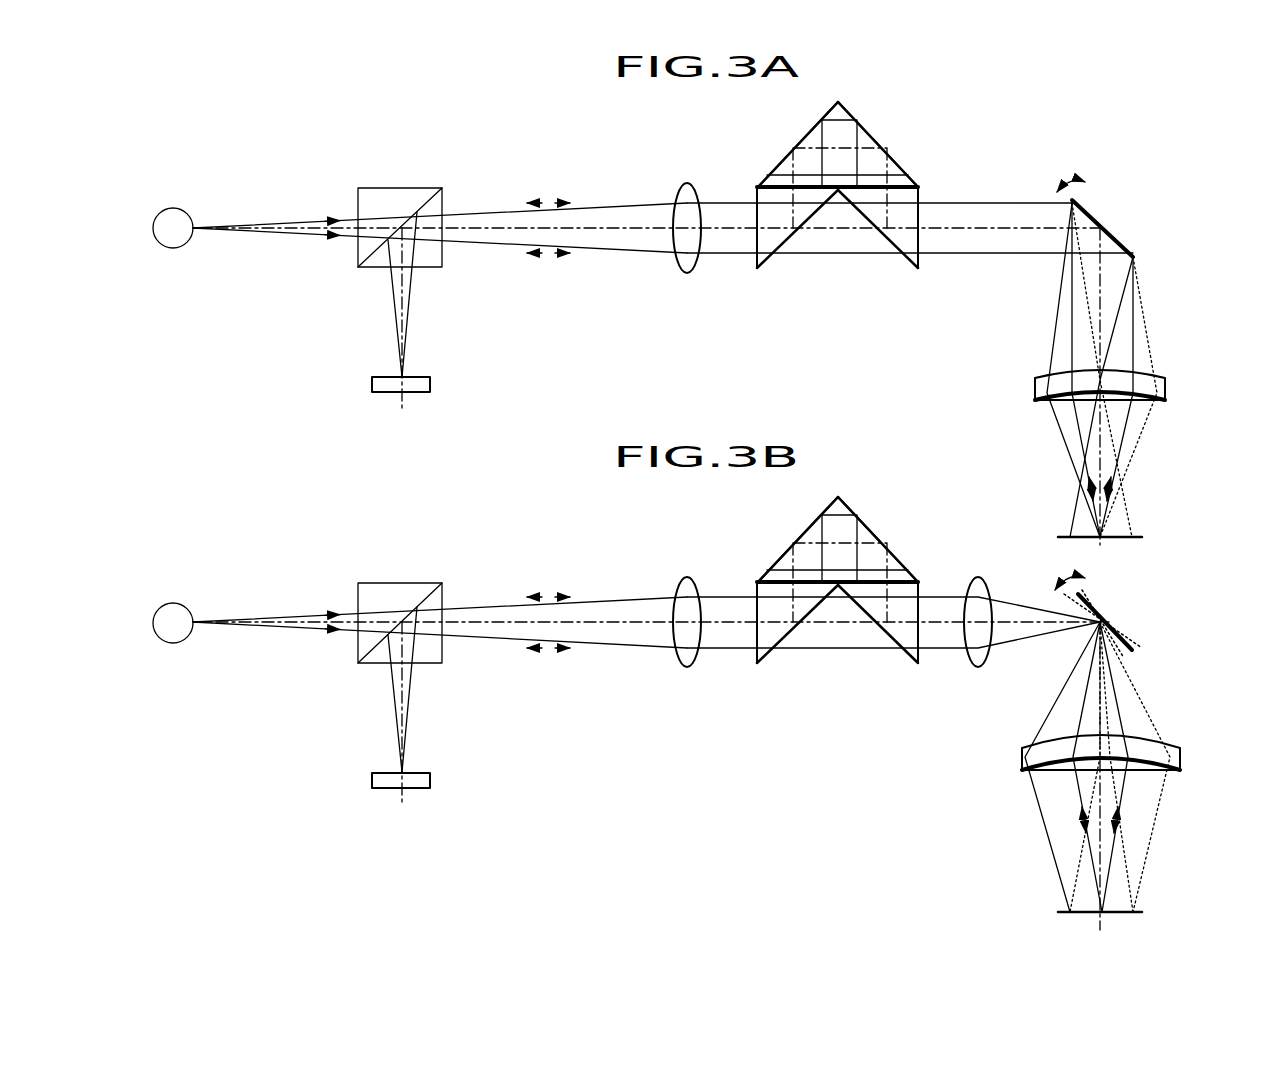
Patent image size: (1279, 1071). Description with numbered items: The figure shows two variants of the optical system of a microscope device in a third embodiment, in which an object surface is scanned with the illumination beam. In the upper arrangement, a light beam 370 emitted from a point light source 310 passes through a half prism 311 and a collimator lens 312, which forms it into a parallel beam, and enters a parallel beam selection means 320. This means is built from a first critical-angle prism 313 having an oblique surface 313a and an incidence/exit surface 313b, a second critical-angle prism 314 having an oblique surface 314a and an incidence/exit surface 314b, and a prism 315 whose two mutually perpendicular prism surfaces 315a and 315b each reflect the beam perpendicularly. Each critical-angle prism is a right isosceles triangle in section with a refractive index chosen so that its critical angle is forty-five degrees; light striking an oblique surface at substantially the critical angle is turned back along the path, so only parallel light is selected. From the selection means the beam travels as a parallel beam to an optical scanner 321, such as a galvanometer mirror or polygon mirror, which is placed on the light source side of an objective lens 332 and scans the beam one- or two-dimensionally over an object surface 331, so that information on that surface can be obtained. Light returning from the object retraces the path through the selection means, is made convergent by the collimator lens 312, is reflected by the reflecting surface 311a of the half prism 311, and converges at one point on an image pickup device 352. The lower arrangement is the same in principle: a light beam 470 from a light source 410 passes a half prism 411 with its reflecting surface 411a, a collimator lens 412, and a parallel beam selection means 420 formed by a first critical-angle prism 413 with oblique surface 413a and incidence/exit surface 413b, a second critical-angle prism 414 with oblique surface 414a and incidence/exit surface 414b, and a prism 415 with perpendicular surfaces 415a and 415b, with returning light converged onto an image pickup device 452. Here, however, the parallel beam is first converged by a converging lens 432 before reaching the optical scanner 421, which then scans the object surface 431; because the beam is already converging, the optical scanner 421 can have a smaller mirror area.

In FIG. 3A, the light source 310 is at (177, 207).
In FIG. 3A, the half prism 311 is at (433, 269).
In FIG. 3A, the reflecting surface 311a is at (430, 195).
In FIG. 3A, the collimator lens 312 is at (678, 270).
In FIG. 3A, the first critical-angle prism 313 is at (777, 259).
In FIG. 3A, the oblique surface 313a is at (797, 243).
In FIG. 3A, the incidence/exit surface 313b is at (755, 253).
In FIG. 3A, the second critical-angle prism 314 is at (909, 243).
In FIG. 3A, the oblique surface 314a is at (858, 214).
In FIG. 3A, the incidence/exit surface 314b is at (920, 200).
In FIG. 3A, the prism 315 is at (858, 147).
In FIG. 3A, the prism surface 315a is at (901, 168).
In FIG. 3A, the prism surface 315b is at (807, 133).
In FIG. 3A, the parallel beam selection means 320 is at (841, 199).
In FIG. 3A, the optical scanner 321 is at (1137, 257).
In FIG. 3A, the object surface 331 is at (1143, 537).
In FIG. 3A, the objective lens 332 is at (1168, 394).
In FIG. 3A, the image pickup device 352 is at (407, 377).
In FIG. 3A, the light beam 370 is at (293, 238).
In FIG. 3B, the light source 410 is at (178, 602).
In FIG. 3B, the half prism 411 is at (431, 663).
In FIG. 3B, the reflecting surface 411a is at (430, 590).
In FIG. 3B, the collimator lens 412 is at (678, 664).
In FIG. 3B, the first critical-angle prism 413 is at (777, 655).
In FIG. 3B, the oblique surface 413a is at (797, 640).
In FIG. 3B, the incidence/exit surface 413b is at (755, 650).
In FIG. 3B, the second critical-angle prism 414 is at (909, 658).
In FIG. 3B, the oblique surface 414a is at (858, 609).
In FIG. 3B, the incidence/exit surface 414b is at (920, 655).
In FIG. 3B, the prism 415 is at (853, 544).
In FIG. 3B, the prism surface 415a is at (901, 563).
In FIG. 3B, the prism surface 415b is at (807, 528).
In FIG. 3B, the parallel beam selection means 420 is at (841, 598).
In FIG. 3B, the optical scanner 421 is at (1136, 652).
In FIG. 3B, the object surface 431 is at (1143, 912).
In FIG. 3B, the converging lens 432 is at (988, 585).
In FIG. 3B, the image pickup device 452 is at (407, 773).
In FIG. 3B, the light beam 470 is at (293, 632).